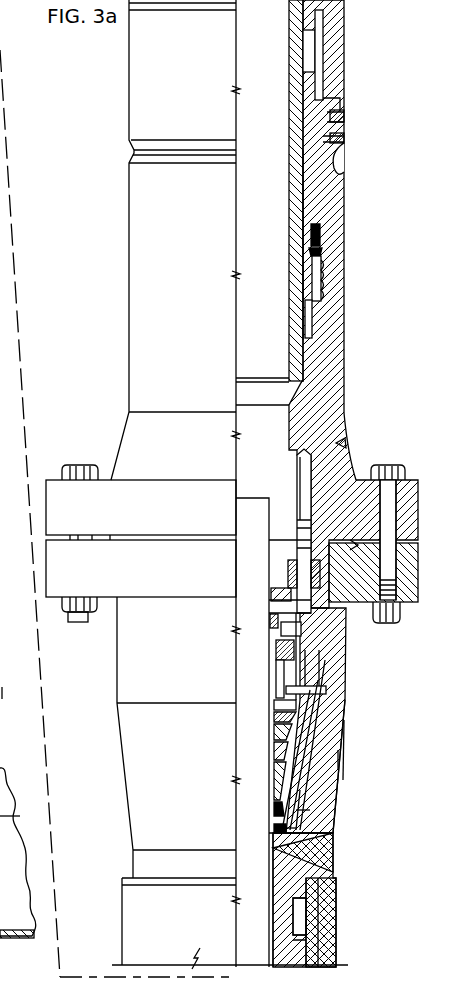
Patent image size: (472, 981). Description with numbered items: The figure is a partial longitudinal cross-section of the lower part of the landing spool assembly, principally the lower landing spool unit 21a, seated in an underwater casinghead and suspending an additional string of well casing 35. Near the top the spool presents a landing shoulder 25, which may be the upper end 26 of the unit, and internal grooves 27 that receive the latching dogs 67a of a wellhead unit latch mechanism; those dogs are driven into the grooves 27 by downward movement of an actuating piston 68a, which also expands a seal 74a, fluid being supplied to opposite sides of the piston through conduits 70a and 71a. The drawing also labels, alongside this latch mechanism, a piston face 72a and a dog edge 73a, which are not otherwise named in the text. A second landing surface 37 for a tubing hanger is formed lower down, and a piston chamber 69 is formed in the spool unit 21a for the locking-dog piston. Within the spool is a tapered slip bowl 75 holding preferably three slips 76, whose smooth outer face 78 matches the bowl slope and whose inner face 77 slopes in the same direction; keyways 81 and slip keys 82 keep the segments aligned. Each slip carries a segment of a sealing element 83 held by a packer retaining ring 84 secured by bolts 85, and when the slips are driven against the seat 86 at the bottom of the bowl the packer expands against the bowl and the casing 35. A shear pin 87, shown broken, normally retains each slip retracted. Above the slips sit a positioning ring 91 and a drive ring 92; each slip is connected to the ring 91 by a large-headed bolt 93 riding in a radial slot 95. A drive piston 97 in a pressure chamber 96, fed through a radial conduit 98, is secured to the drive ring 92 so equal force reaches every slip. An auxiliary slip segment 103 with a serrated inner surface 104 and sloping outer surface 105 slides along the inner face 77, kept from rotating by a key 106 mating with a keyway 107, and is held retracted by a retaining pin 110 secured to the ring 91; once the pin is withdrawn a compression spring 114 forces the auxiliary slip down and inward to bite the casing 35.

The lower landing spool assembly unit 21a is at (334, 778).
The landing shoulder 25 is at (300, 394).
The upper end of the unit 26 is at (345, 170).
The internal recesses or grooves 27 is at (322, 262).
The string of well casing 35 is at (240, 868).
The second landing surface 37 is at (300, 548).
The latching dogs 67a is at (322, 282).
The actuating piston 68a is at (308, 205).
The piston chamber 69 is at (298, 920).
The conduit 70a is at (345, 118).
The conduit 71a is at (345, 138).
The slot 72a is at (312, 318).
The seal ring 73a is at (320, 250).
The seal 74a is at (320, 235).
The tapered slip bowl 75 is at (337, 710).
The slips 76 is at (336, 742).
The inner face of the slips 77 is at (302, 800).
The outer face of the slips 78 is at (300, 815).
The keyways 81 is at (338, 760).
The slip keys 82 is at (322, 730).
The sealing element or packer 83 is at (287, 830).
The packer retaining ring 84 is at (292, 835).
The bolts 85 is at (280, 810).
The seat 86 is at (282, 832).
The shear pin 87 is at (350, 615).
The slip-segment positioning ring 91 is at (287, 636).
The drive ring 92 is at (290, 612).
The bolt 93 is at (282, 648).
The radial slot 95 is at (277, 625).
The pressure chamber 96 is at (310, 470).
The drive piston 97 is at (300, 558).
The radial conduit 98 is at (346, 443).
The auxiliary slip segment 103 is at (283, 735).
The seal ring 104 is at (283, 752).
The sloping outer surface 105 is at (284, 770).
The key 106 is at (290, 702).
The keyway 107 is at (286, 720).
The positioning or retaining pin 110 is at (322, 690).
The compression spring 114 is at (276, 674).